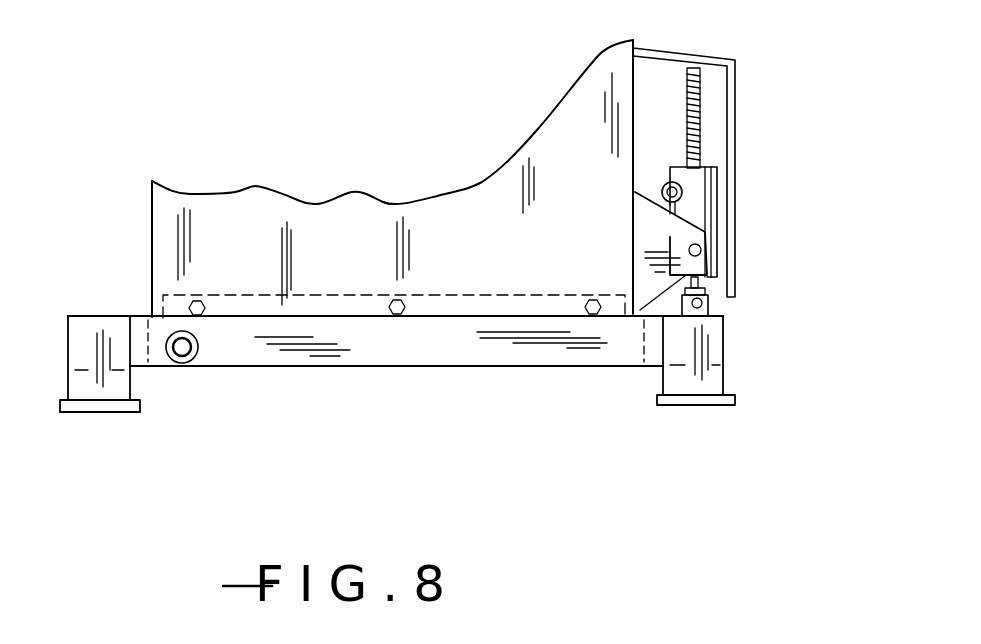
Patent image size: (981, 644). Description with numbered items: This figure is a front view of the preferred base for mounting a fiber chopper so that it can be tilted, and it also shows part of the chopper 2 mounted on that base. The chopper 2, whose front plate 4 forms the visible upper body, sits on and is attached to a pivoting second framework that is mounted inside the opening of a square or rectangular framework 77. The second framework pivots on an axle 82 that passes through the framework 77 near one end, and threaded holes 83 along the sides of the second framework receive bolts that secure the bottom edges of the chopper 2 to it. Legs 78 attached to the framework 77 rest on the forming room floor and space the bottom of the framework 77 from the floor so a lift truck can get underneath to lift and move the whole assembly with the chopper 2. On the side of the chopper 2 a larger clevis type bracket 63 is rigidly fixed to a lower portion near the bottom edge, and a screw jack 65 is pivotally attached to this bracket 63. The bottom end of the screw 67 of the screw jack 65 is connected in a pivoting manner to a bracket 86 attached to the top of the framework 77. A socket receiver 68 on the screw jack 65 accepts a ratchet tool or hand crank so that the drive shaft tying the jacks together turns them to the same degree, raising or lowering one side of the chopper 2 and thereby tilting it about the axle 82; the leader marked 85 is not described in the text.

The chopper 2 is at (152, 229).
The front plate 4 is at (352, 210).
The clevis type bracket 63 is at (657, 238).
The screw jack 65 is at (705, 196).
The screw 67 is at (698, 90).
The socket receiver 68 is at (662, 190).
The framework 77 is at (543, 345).
The legs 78 is at (75, 412).
The axle 82 is at (198, 345).
The threaded holes 83 is at (586, 302).
The pin 85 is at (185, 360).
The brackets 86 is at (708, 303).